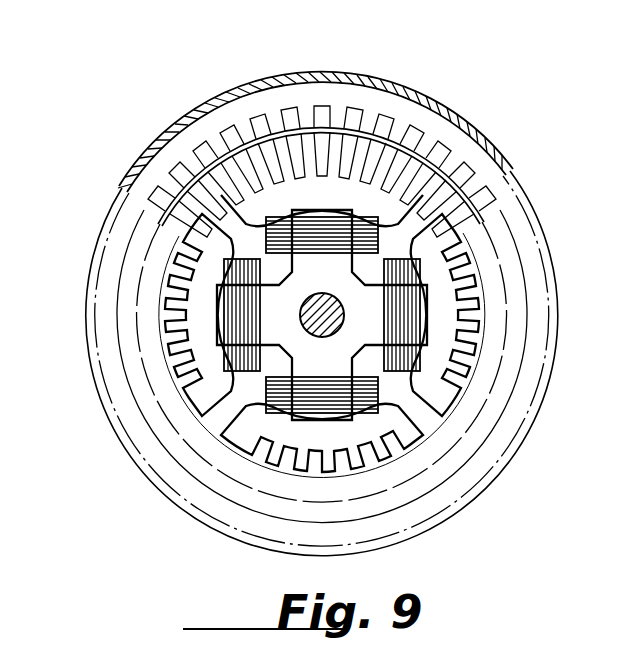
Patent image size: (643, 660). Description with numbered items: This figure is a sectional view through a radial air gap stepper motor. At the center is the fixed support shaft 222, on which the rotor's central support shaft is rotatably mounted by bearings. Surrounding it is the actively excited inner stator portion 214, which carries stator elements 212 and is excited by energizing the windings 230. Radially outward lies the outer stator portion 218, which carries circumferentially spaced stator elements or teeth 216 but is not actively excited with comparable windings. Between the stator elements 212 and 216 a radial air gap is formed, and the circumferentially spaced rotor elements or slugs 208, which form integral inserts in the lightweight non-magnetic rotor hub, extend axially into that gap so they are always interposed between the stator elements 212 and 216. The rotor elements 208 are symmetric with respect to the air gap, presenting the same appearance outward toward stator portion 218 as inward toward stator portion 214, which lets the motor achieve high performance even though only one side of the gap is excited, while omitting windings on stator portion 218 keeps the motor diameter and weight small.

The rotor elements 208 is at (364, 363).
The stator elements 212 is at (425, 157).
The stator portion 214 is at (253, 195).
The stator elements 216 is at (388, 128).
The stator portion 218 is at (330, 91).
The fixed support shaft 222 is at (317, 307).
The windings 230 is at (412, 307).